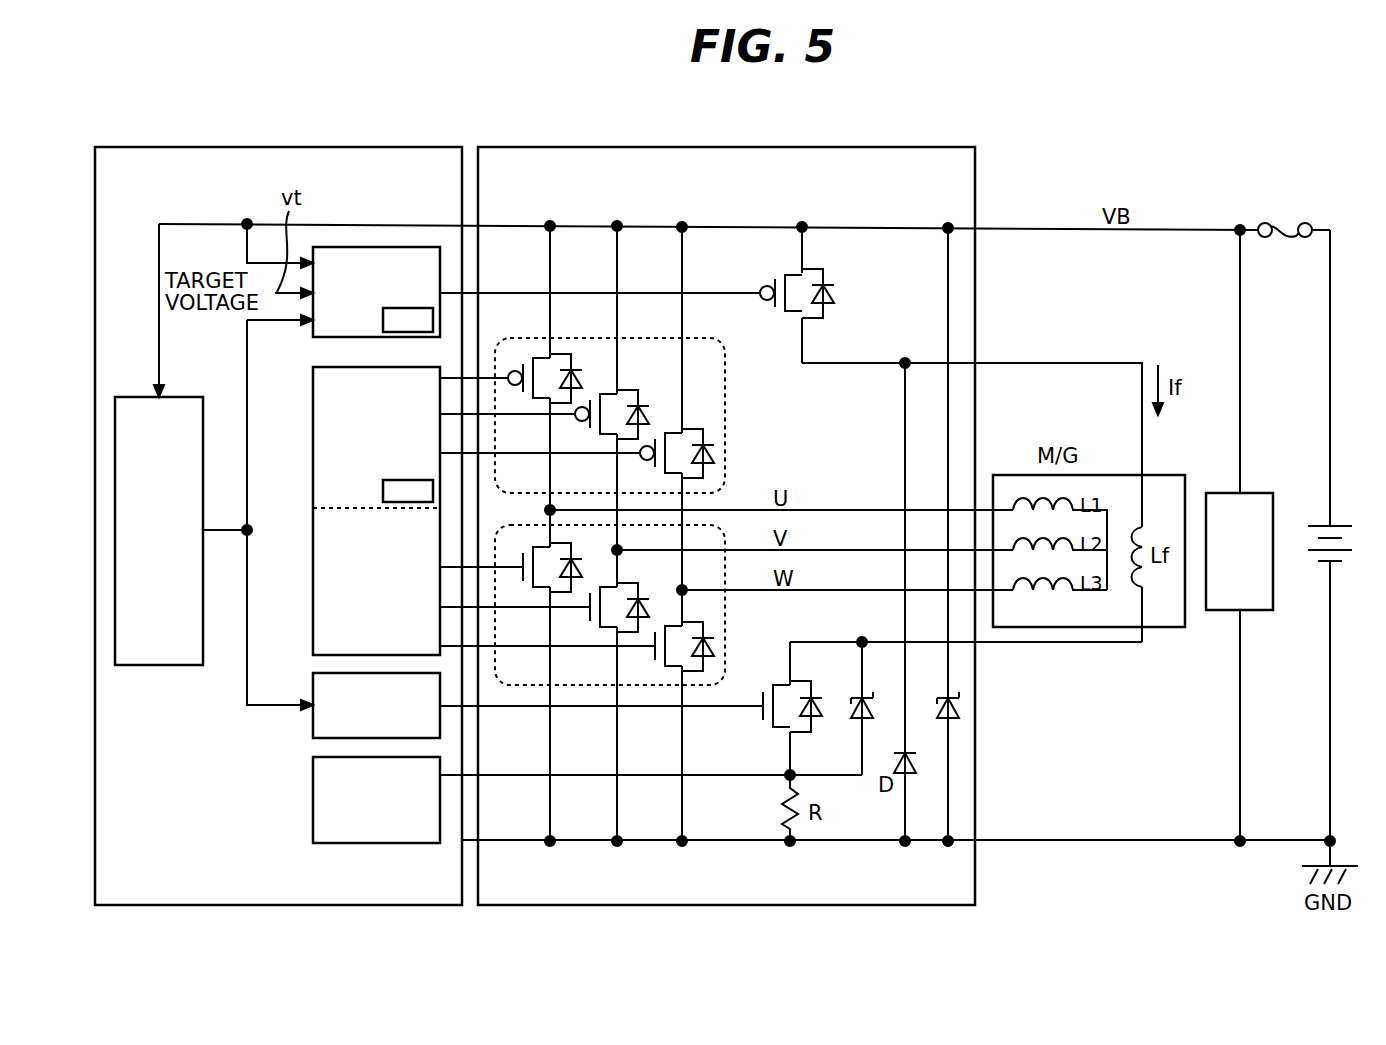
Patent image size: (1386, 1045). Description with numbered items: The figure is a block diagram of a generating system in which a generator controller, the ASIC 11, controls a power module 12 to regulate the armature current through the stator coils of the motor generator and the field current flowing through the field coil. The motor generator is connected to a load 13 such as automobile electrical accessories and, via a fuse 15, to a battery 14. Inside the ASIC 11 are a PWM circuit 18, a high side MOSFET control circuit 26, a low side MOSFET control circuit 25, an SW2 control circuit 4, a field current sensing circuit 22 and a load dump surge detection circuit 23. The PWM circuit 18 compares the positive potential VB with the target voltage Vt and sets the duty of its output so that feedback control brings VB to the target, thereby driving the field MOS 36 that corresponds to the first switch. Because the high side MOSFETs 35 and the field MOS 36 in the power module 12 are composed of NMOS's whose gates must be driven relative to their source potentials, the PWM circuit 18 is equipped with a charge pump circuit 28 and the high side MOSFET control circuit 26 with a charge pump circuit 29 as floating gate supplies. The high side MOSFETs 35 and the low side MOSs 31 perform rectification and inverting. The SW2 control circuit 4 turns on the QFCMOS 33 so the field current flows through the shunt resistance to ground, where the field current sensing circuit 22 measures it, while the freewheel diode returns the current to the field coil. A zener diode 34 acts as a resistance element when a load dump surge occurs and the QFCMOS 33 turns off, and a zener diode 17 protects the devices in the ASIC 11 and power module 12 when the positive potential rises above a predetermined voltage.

The generator controller (ASIC) 11 is at (392, 147).
The power module 12 is at (905, 147).
The load 13 is at (1262, 493).
The battery 14 is at (1336, 524).
The fuse 15 is at (1290, 226).
The zener diode 17 is at (960, 706).
The PWM circuit 18 is at (378, 247).
The field current sensing circuit 22 is at (313, 795).
The load dump surge detection circuit 23 is at (173, 399).
The low side MOSFET control circuit 25 is at (313, 590).
The high side MOSFET control circuit 26 is at (313, 392).
The charge pump circuit 28 is at (405, 326).
The charge pump circuit 29 is at (383, 490).
The low side MOSs 31 is at (725, 617).
The QFCMOS 33 is at (763, 690).
The zener diode 34 is at (870, 706).
The high side MOSFETs 35 is at (725, 415).
The field MOS 36 is at (815, 272).
The SW2 control circuit 4 is at (313, 683).